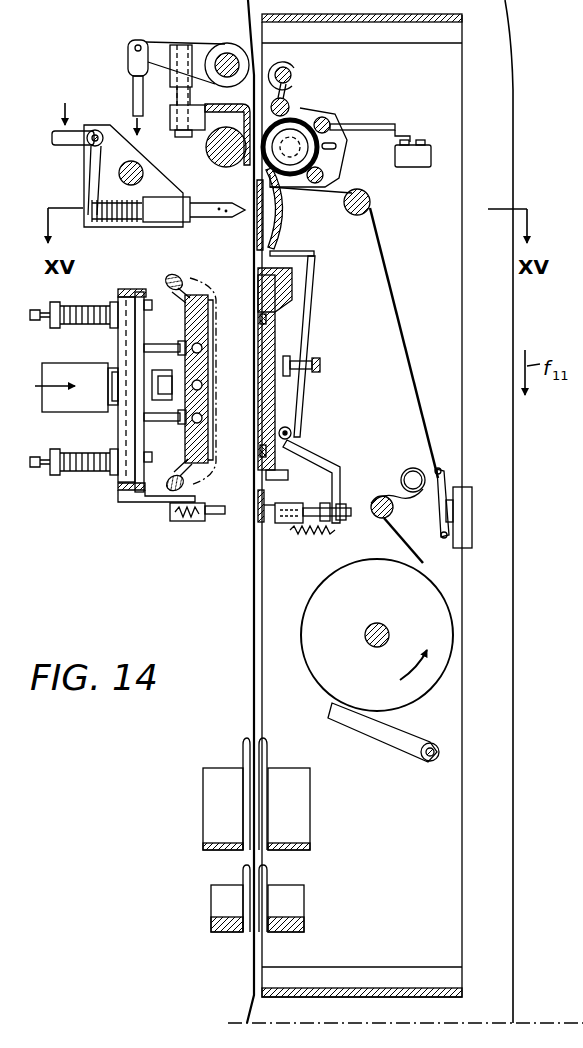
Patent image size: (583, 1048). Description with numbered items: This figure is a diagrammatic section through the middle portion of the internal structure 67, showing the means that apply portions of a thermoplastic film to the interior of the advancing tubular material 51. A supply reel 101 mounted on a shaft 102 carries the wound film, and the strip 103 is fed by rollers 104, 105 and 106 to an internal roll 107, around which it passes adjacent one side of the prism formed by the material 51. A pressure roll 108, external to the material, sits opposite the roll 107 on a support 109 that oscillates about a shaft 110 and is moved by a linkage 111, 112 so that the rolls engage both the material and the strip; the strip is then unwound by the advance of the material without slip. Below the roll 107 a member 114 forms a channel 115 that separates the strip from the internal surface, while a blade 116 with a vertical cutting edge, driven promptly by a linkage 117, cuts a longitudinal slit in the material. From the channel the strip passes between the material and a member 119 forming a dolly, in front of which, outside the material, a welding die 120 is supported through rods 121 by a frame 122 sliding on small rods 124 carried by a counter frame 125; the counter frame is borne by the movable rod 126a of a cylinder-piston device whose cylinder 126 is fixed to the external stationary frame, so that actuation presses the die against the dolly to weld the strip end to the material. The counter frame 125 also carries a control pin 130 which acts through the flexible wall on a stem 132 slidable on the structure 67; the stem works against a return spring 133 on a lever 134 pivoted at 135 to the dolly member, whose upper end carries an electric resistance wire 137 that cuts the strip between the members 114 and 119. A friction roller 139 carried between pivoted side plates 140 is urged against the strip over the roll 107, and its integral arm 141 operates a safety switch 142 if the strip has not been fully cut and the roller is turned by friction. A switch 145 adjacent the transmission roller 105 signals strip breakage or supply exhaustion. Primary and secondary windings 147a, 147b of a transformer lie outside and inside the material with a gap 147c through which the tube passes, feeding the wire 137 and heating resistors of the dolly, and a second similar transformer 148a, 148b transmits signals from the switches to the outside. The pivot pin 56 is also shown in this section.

The tubular material 51 is at (253, 626).
The pivot pin 56 is at (96, 129).
The internal structure 67 is at (464, 845).
The supply reel 101 is at (335, 683).
The shaft 102 is at (376, 624).
The film strip 103 is at (405, 338).
The roller 104 is at (392, 513).
The transmission roller 105 is at (410, 468).
The roller 106 is at (372, 204).
The roll 107 is at (303, 110).
The pressure roll 108 is at (216, 160).
The support 109 is at (172, 122).
The shaft 110 is at (227, 43).
The linkage 111 is at (160, 42).
The linkage 112 is at (133, 86).
The member 114 is at (278, 246).
The channel 115 is at (286, 208).
The blade 116 is at (222, 219).
The linkage 117 is at (88, 176).
The dolly 119 is at (270, 342).
The welding die 120 is at (205, 408).
The rods 121 is at (160, 345).
The frame 122 is at (120, 437).
The small rods 124 is at (80, 300).
The counter frame 125 is at (128, 290).
The cylinder 126 is at (62, 413).
The movable rod 126a is at (113, 367).
The control pin 130 is at (216, 515).
The stem 132 is at (285, 530).
The return spring 133 is at (318, 536).
The lever 134 is at (312, 295).
The pivot 135 is at (291, 432).
The electric resistance wire 137 is at (290, 250).
The friction roller 139 is at (332, 120).
The pivoted side plates 140 is at (292, 100).
The arm 141 is at (363, 132).
The safety switch 142 is at (420, 135).
The switch 145 is at (455, 482).
The primary winding 147a is at (217, 772).
The secondary winding 147b is at (290, 770).
The gap 147c is at (248, 735).
The second transformer winding 148a is at (208, 893).
The second transformer winding 148b is at (295, 897).